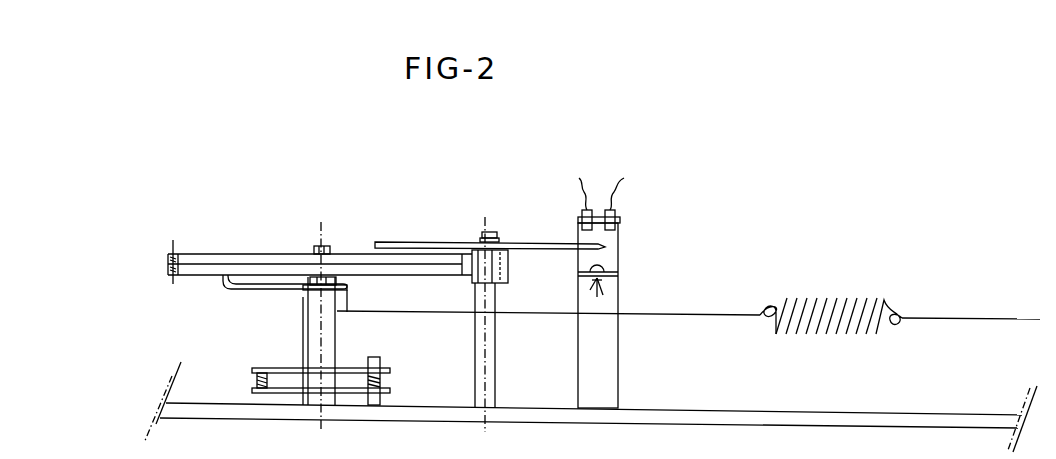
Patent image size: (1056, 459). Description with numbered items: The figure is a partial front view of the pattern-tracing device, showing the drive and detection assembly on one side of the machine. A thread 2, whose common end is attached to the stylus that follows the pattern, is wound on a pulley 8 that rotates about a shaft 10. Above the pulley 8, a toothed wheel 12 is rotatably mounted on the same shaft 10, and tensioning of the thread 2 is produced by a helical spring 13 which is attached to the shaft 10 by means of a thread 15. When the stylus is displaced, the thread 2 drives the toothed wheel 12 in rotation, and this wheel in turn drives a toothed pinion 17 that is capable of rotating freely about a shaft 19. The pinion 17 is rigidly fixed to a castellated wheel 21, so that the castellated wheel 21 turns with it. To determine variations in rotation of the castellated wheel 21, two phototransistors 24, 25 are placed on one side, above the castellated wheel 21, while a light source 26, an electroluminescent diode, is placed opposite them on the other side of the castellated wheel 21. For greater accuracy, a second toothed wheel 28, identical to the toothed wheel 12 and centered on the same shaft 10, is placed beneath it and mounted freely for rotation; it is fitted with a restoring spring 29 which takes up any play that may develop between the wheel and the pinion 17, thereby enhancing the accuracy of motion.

The thread 2 is at (376, 385).
The pulley 8 is at (278, 364).
The shaft 10 is at (320, 245).
The toothed wheel 12 is at (208, 254).
The helical spring 13 is at (798, 338).
The thread 15 is at (675, 318).
The toothed pinion 17 is at (505, 282).
The shaft 19 is at (486, 235).
The castellated wheel 21 is at (527, 243).
The phototransistor 24 is at (620, 220).
The phototransistor 25 is at (578, 228).
The light source 26 is at (603, 277).
The second toothed wheel 28 is at (201, 280).
The restoring spring 29 is at (248, 278).